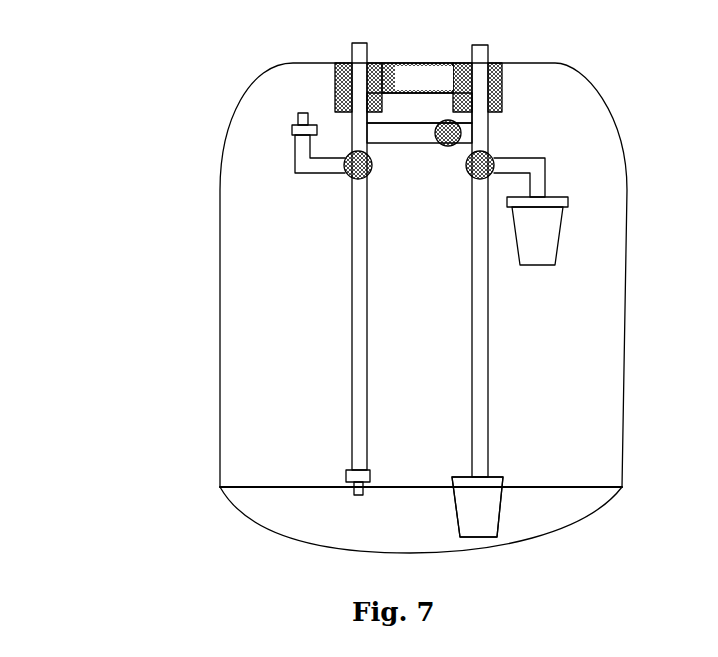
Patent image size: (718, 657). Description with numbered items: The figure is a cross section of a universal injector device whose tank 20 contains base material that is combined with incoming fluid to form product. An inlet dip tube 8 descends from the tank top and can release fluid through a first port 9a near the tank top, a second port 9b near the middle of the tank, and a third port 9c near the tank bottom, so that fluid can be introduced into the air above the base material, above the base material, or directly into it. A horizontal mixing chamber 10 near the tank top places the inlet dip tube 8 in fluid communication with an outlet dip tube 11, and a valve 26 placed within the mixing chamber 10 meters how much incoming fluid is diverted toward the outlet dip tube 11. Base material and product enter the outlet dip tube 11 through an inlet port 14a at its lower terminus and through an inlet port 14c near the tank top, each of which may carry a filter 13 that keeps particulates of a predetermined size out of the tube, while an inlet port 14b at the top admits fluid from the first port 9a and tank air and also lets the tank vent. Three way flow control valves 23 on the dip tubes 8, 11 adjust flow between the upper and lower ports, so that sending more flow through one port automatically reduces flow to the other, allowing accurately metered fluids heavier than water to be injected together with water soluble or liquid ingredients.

The tank 20 is at (215, 275).
The inlet dip tube 8 is at (338, 256).
The outlet dip tube 11 is at (505, 261).
The mixing chamber 10 is at (419, 150).
The first port 9a is at (419, 108).
The second port 9b is at (296, 143).
The third port 9c is at (341, 496).
The inlet port 14a is at (505, 507).
The inlet port 14b is at (418, 87).
The inlet port 14c is at (547, 182).
The filter 13 is at (512, 372).
The three way flow control valve 23 is at (350, 173).
The valve 26 is at (458, 131).